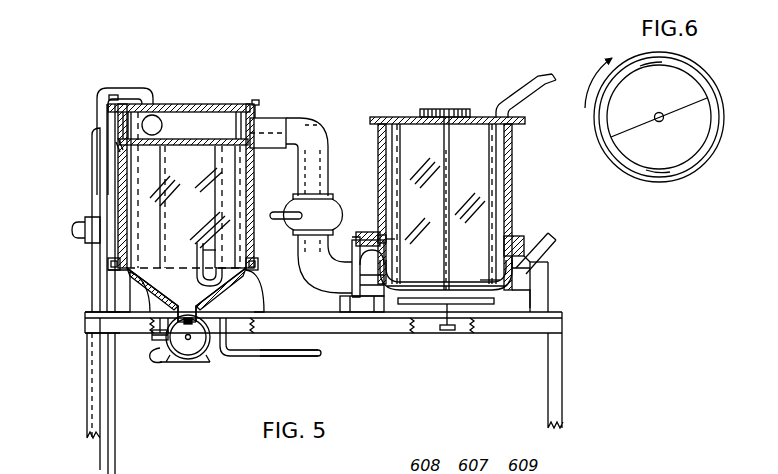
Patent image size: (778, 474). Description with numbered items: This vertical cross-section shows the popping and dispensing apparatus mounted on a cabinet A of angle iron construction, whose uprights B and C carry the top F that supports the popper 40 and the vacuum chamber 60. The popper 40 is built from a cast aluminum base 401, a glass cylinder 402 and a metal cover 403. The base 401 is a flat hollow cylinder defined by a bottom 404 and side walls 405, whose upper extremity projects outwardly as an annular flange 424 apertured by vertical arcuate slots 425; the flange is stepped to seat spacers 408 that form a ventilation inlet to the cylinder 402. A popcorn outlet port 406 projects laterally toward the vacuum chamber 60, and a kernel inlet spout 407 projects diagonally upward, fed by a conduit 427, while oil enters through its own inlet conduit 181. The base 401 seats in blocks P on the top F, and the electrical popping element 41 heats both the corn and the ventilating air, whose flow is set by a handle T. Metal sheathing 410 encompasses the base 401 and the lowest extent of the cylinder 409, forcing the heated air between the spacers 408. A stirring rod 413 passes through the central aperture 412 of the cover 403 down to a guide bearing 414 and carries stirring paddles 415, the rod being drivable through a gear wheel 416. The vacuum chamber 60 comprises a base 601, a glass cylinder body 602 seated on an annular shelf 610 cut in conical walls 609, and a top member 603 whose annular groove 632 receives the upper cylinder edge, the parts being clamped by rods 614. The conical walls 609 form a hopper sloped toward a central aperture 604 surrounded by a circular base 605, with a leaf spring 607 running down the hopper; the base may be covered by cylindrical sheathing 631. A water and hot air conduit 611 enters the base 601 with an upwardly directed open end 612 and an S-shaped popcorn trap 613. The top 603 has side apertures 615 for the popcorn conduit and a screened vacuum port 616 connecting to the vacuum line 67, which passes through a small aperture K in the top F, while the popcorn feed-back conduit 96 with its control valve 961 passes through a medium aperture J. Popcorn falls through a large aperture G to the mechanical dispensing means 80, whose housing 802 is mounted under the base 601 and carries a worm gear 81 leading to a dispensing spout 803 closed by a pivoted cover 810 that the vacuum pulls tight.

In FIG. 5, the popper 40 is at (318, 204).
In FIG. 5, the electrical popping element 41 is at (440, 304).
In FIG. 5, the vacuum chamber 60 is at (236, 201).
In FIG. 5, the vacuum line 67 is at (117, 90).
In FIG. 5, the mechanical feed means 80 is at (187, 380).
In FIG. 5, the worm gear 81 is at (174, 342).
In FIG. 5, the popcorn feed-back conduit 96 is at (91, 156).
In FIG. 5, the oil inlet conduit 181 is at (539, 86).
In FIG. 5, the cast base 401 is at (541, 262).
In FIG. 5, the glass cylinder 402 is at (512, 210).
In FIG. 5, the lid 403 is at (521, 120).
In FIG. 5, the bottom 404 is at (503, 293).
In FIG. 6, the bottom 404 is at (722, 137).
In FIG. 5, the side walls 405 is at (382, 252).
In FIG. 5, the popcorn outlet port 406 is at (372, 300).
In FIG. 5, the kernel inlet spout 407 is at (527, 263).
In FIG. 5, the L-shaped spacers 408 is at (382, 236).
In FIG. 5, the lowest extent of the cylinder 409 is at (533, 270).
In FIG. 5, the metal sheathing 410 is at (532, 282).
In FIG. 5, the central aperture 412 is at (450, 125).
In FIG. 5, the stirring rod 413 is at (450, 166).
In FIG. 5, the guide bearing 414 is at (441, 289).
In FIG. 6, the guide bearing 414 is at (692, 97).
In FIG. 5, the stirring paddles 415 is at (500, 283).
In FIG. 6, the stirring paddles 415 is at (660, 178).
In FIG. 5, the gear wheel 416 is at (426, 113).
In FIG. 5, the annular flange 424 is at (522, 238).
In FIG. 5, the vertical arcuate slots 425 is at (358, 235).
In FIG. 5, the conduit 427 is at (558, 230).
In FIG. 5, the base 601 is at (246, 294).
In FIG. 5, the glass cylinder body 602 is at (250, 180).
In FIG. 5, the top member 603 is at (215, 103).
In FIG. 5, the central aperture 604 is at (164, 322).
In FIG. 5, the circular base 605 is at (110, 333).
In FIG. 5, the leaf spring 607 is at (197, 318).
In FIG. 5, the conical walls 609 is at (135, 282).
In FIG. 5, the annular shelf 610 is at (110, 270).
In FIG. 5, the water and hot air conduit 611 is at (292, 358).
In FIG. 5, the open end 612 is at (204, 251).
In FIG. 5, the S popcorn trap 613 is at (226, 268).
In FIG. 5, the rods 614 is at (112, 205).
In FIG. 5, the side apertures 615 is at (262, 122).
In FIG. 5, the vacuum port 616 is at (156, 103).
In FIG. 5, the vertical cylindrical sheathing 631 is at (118, 286).
In FIG. 5, the annular groove 632 is at (116, 146).
In FIG. 5, the housing 802 is at (194, 354).
In FIG. 5, the dispensing spout 803 is at (211, 348).
In FIG. 5, the cover 810 is at (172, 372).
In FIG. 5, the control valve 961 is at (72, 234).
In FIG. 5, the cabinet A is at (82, 415).
In FIG. 5, the upright B is at (96, 386).
In FIG. 5, the upright C is at (561, 373).
In FIG. 5, the top F is at (565, 312).
In FIG. 5, the large aperture G is at (197, 270).
In FIG. 5, the medium aperture J is at (84, 315).
In FIG. 5, the small aperture K is at (100, 328).
In FIG. 5, the L-shaped blocks P is at (522, 292).
In FIG. 5, the handle T is at (451, 332).